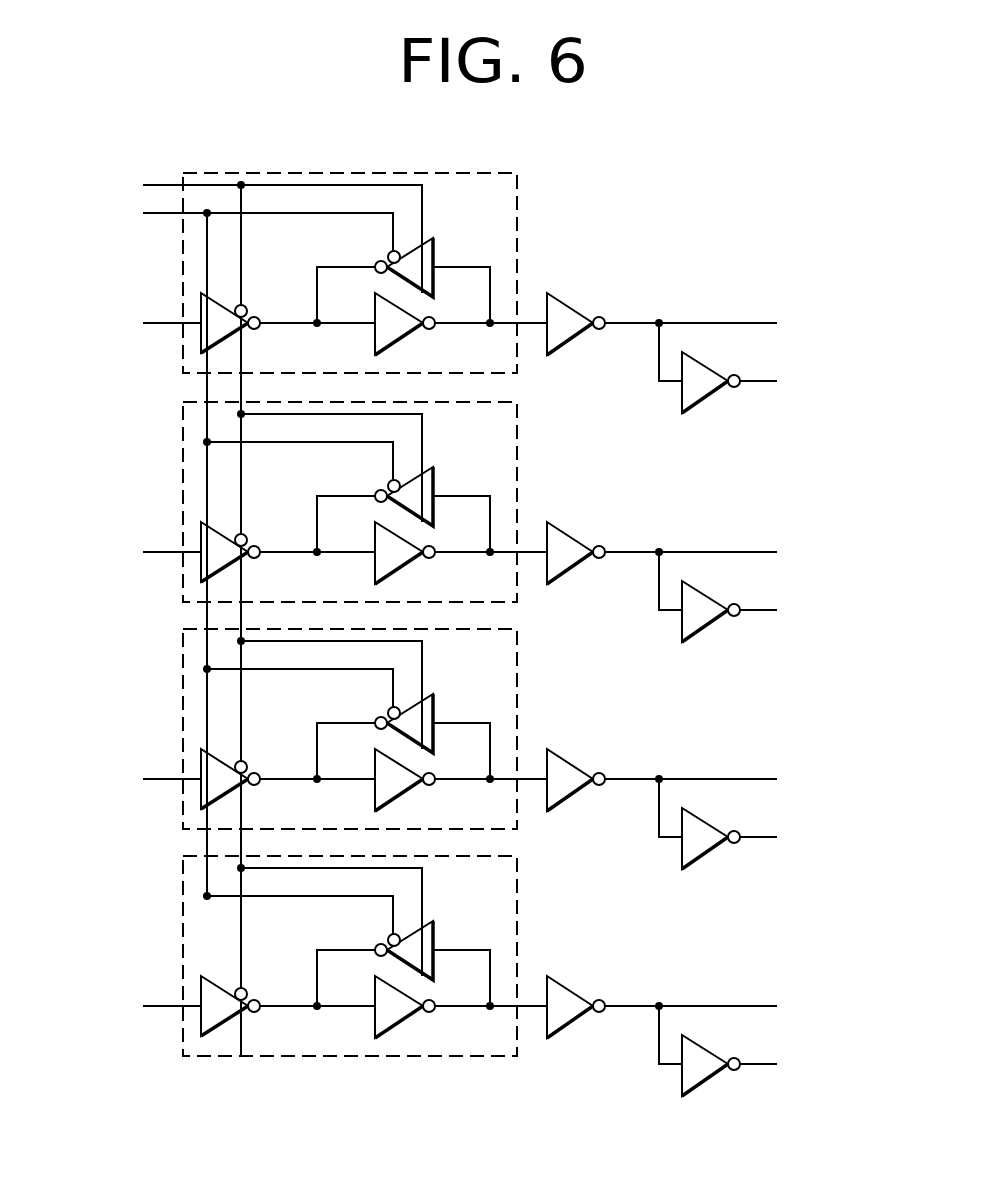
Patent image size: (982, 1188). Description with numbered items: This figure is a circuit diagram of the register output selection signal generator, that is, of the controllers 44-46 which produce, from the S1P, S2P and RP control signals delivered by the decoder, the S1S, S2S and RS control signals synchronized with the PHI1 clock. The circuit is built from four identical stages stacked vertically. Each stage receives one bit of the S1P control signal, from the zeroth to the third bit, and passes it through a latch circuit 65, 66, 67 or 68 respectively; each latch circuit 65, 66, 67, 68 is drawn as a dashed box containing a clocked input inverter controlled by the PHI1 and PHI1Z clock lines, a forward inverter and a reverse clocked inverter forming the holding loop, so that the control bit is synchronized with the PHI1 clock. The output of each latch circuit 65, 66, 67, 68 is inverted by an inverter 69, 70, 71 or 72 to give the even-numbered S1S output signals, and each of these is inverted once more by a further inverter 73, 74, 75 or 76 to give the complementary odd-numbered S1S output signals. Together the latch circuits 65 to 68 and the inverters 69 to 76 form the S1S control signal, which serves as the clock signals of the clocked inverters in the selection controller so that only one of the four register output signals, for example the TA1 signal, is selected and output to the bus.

The controllers 44-46 is at (753, 212).
The latch circuit 65 is at (518, 245).
The latch circuit 66 is at (370, 502).
The latch circuit 67 is at (378, 729).
The latch circuit 68 is at (370, 956).
The inverter 69 is at (571, 305).
The inverter 70 is at (647, 528).
The inverter 71 is at (647, 755).
The inverter 72 is at (647, 982).
The inverter 73 is at (706, 401).
The inverter 74 is at (718, 625).
The inverter 75 is at (718, 852).
The inverter 76 is at (718, 1079).